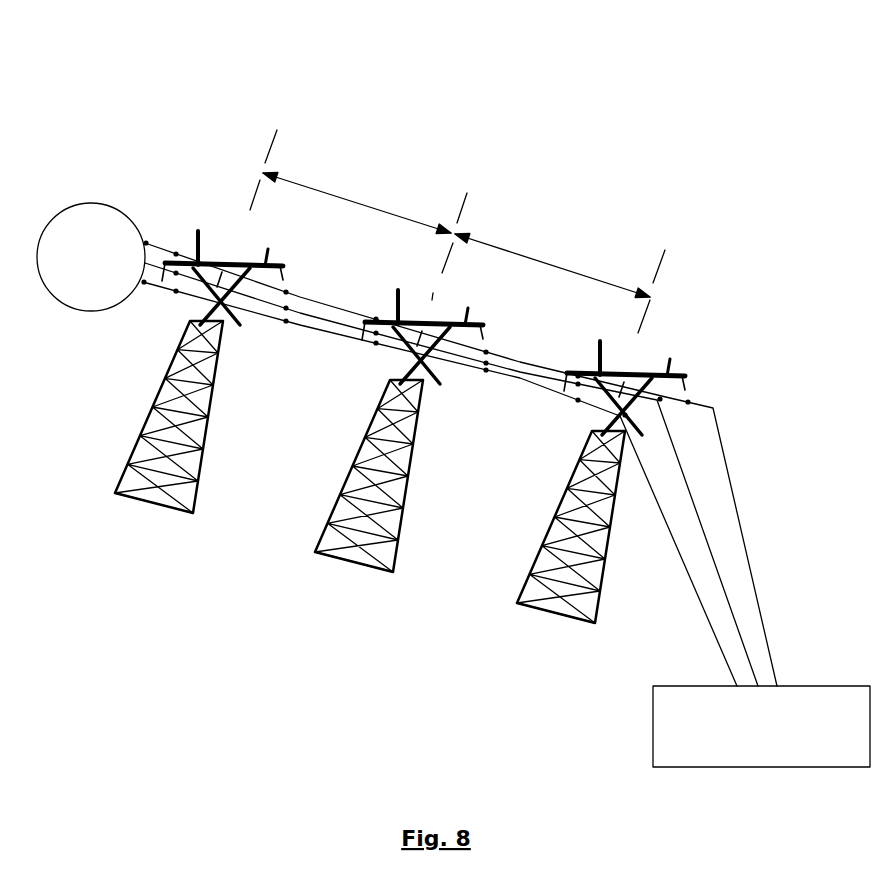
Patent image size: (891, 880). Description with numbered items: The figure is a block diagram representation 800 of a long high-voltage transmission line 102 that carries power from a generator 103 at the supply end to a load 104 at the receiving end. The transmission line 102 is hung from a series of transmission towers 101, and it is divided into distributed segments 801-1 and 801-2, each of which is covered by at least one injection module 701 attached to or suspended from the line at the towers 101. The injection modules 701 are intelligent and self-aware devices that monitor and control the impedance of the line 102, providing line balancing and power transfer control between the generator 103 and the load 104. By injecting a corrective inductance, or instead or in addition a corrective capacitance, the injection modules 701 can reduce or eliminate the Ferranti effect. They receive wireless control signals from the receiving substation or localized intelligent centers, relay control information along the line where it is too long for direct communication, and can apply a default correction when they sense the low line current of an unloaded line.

The block diagram representation of a long HV transmission line 800 is at (468, 105).
The distributed segment 801-1 is at (362, 202).
The distributed segment 801-2 is at (545, 260).
The generator 103 is at (83, 202).
The load 104 is at (821, 686).
The transmission towers 101 is at (377, 423).
The transmission line 102 is at (337, 307).
The injection modules 701 is at (176, 283).